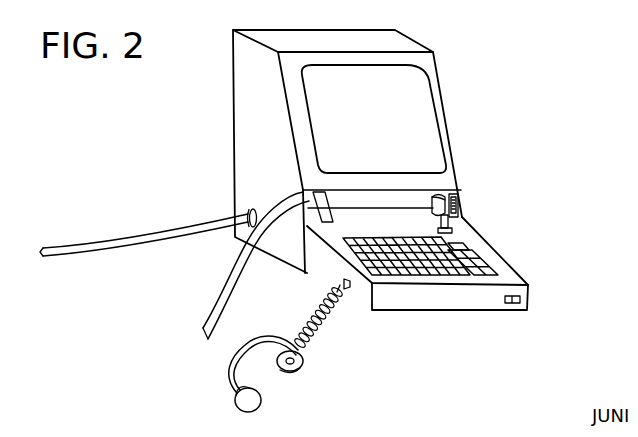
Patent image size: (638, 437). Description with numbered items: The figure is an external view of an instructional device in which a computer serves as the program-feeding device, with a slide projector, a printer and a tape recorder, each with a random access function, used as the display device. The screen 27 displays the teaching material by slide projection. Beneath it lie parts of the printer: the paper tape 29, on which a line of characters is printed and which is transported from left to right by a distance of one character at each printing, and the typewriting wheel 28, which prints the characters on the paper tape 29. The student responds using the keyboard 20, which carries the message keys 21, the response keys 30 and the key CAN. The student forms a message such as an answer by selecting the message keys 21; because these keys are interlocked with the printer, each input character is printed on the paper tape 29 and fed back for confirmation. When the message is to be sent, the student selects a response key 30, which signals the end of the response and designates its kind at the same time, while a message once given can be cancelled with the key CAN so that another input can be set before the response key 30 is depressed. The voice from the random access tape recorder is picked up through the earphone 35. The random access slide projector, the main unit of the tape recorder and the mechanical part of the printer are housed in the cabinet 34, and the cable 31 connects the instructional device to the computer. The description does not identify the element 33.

The keyboard 20 is at (512, 277).
The message keys 21 is at (428, 277).
The screen 27 is at (420, 110).
The typewriting wheel 28 is at (450, 189).
The paper tape 29 is at (368, 198).
The response keys 30 is at (488, 255).
The CAN key CAN is at (462, 247).
The cable 31 is at (123, 250).
The connector socket 33 is at (511, 304).
The cabinet 34 is at (278, 247).
The earphone 35 is at (303, 358).